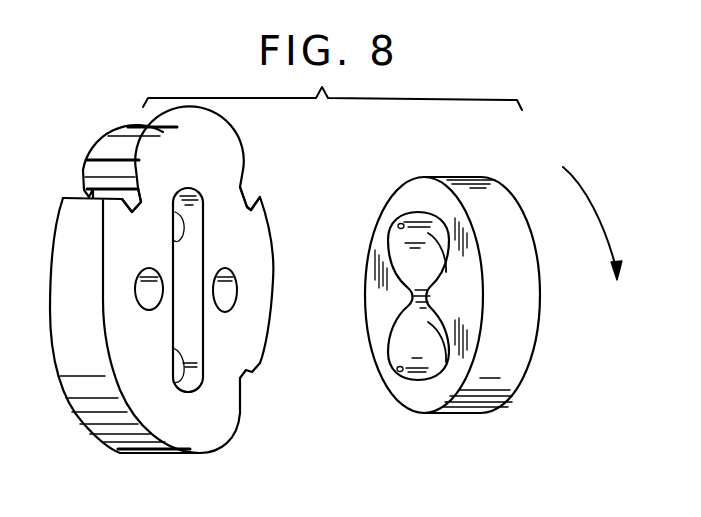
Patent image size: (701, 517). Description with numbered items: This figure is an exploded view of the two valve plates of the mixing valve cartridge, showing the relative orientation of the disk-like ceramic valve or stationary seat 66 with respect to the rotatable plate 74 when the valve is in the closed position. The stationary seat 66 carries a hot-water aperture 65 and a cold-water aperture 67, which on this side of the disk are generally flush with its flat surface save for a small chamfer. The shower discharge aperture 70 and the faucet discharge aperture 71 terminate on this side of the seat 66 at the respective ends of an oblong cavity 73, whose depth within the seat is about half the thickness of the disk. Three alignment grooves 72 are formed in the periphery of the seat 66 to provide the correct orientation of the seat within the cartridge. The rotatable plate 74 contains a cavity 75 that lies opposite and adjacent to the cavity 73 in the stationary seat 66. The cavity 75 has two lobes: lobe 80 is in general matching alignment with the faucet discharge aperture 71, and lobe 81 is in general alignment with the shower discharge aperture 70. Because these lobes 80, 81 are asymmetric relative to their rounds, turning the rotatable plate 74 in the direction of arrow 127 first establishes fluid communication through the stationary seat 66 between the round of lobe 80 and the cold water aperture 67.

The stationary seat 66 is at (232, 138).
The alignment grooves 72 is at (97, 173).
The shower discharge aperture 70 is at (183, 217).
The oblong cavity 73 is at (197, 241).
The faucet discharge aperture 71 is at (181, 381).
The hot-water aperture 65 is at (157, 300).
The cold-water aperture 67 is at (230, 293).
The rotatable plate 74 is at (510, 348).
The cavity 75 is at (410, 313).
The lobe 81 is at (400, 227).
The lobe 80 is at (398, 371).
The arrow 127 is at (607, 228).